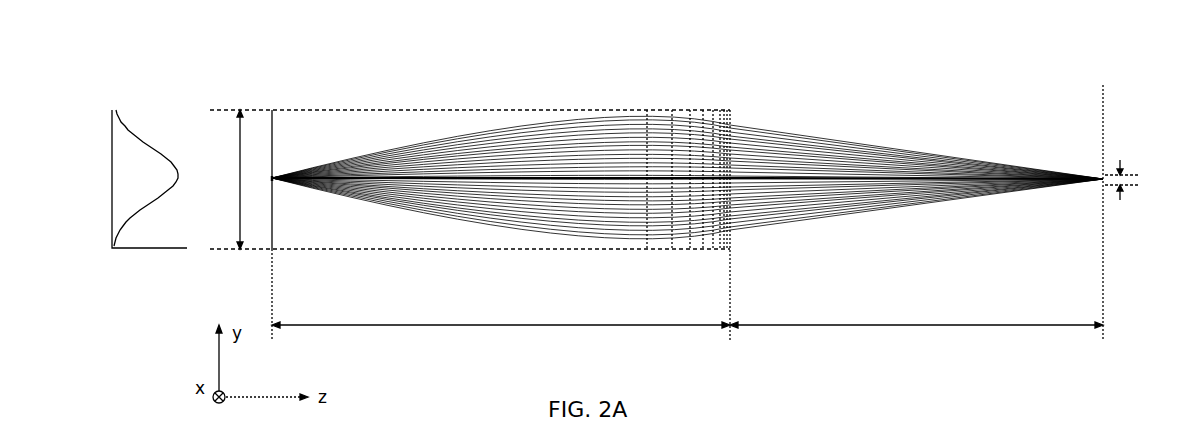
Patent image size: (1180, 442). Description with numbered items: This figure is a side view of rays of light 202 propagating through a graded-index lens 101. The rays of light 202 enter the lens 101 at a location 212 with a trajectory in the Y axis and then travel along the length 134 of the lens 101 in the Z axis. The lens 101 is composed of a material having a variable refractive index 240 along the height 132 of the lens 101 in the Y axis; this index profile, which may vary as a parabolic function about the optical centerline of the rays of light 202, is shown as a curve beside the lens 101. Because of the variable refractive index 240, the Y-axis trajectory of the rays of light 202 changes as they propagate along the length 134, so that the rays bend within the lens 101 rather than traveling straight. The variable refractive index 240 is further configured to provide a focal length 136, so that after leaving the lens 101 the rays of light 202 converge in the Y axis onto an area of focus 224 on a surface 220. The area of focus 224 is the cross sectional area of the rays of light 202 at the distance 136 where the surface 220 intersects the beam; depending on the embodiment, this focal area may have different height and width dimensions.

The lens 101 is at (497, 250).
The height 132 is at (240, 152).
The length 134 is at (452, 327).
The focal length 136 is at (832, 327).
The rays of light 202 is at (392, 150).
The location 212 is at (273, 180).
The surface 220 is at (1103, 272).
The area of focus 224 is at (1116, 158).
The variable refractive index 240 is at (140, 142).